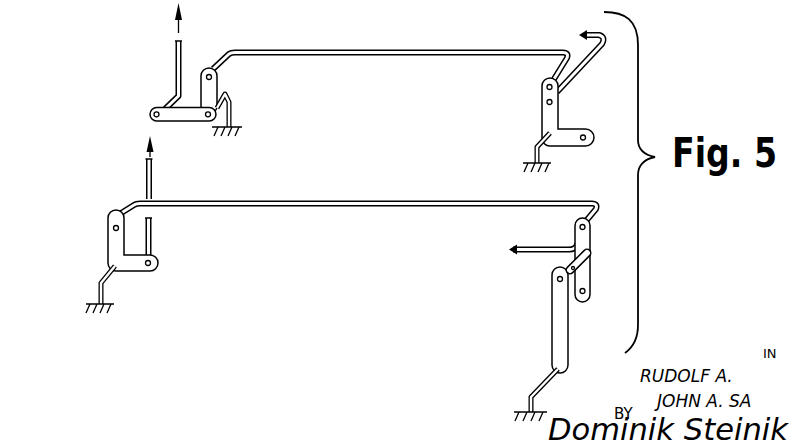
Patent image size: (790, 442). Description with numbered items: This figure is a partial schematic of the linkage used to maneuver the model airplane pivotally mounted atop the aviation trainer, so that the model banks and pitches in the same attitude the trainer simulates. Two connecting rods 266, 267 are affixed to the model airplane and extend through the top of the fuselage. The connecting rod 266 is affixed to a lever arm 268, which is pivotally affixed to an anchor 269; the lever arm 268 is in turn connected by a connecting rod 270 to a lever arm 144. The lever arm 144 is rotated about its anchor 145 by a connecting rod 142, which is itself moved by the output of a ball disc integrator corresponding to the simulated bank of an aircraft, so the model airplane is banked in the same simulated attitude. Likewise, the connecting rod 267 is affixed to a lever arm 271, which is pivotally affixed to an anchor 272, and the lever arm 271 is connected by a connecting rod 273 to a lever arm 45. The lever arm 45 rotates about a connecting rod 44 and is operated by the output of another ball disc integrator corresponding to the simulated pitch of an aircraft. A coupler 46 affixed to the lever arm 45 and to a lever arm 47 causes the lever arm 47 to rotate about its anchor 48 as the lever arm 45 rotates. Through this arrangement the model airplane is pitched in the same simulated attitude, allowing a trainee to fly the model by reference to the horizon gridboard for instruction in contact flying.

The connecting rod 44 is at (514, 248).
The lever arm 45 is at (577, 232).
The coupler 46 is at (566, 264).
The lever arm 47 is at (556, 313).
The anchor 48 is at (540, 382).
The connecting rod 142 is at (603, 58).
The lever arm 144 is at (544, 113).
The anchor 145 is at (535, 152).
The connecting rod 266 is at (175, 67).
The connecting rod 267 is at (146, 178).
The lever arm 268 is at (190, 118).
The anchor 269 is at (232, 110).
The connecting rod 270 is at (397, 50).
The lever arm 271 is at (113, 243).
The anchor 272 is at (96, 286).
The connecting rod 273 is at (287, 199).